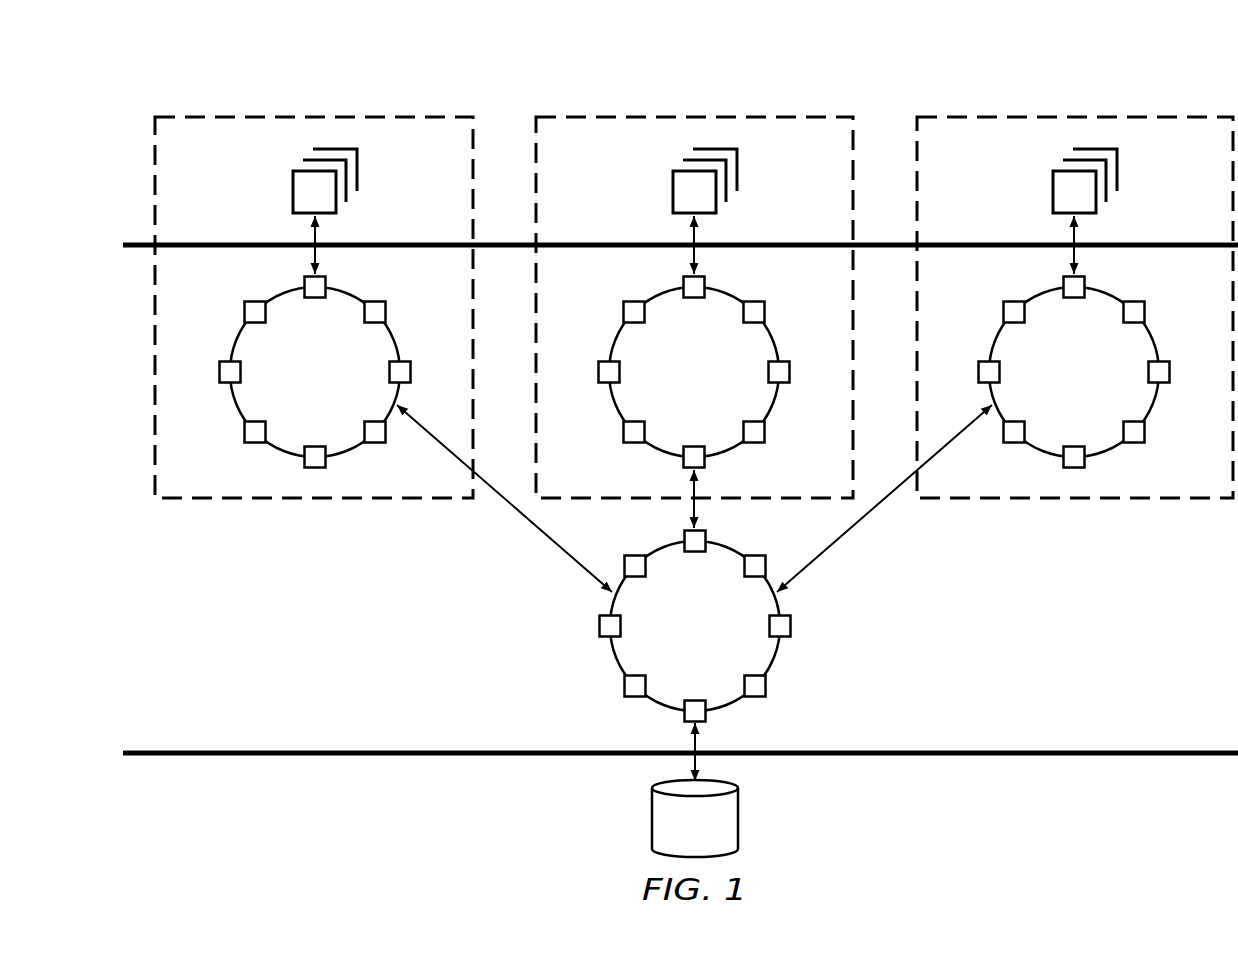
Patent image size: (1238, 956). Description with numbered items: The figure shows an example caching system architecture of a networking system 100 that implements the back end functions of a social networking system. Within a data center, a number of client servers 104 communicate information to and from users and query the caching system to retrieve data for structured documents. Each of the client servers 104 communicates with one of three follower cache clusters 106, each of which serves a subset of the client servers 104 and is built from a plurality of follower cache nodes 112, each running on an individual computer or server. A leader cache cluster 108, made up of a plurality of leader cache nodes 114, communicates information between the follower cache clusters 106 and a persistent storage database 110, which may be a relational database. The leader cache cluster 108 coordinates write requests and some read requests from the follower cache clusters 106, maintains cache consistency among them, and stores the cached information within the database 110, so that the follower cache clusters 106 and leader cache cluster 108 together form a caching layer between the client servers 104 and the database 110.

The networking system 100 is at (984, 83).
The client servers 104 is at (292, 192).
The follower cache clusters 106 is at (296, 385).
The leader cache cluster 108 is at (676, 638).
The persistent storage database 110 is at (739, 822).
The follower cache nodes 112 is at (243, 312).
The leader cache nodes 114 is at (599, 625).